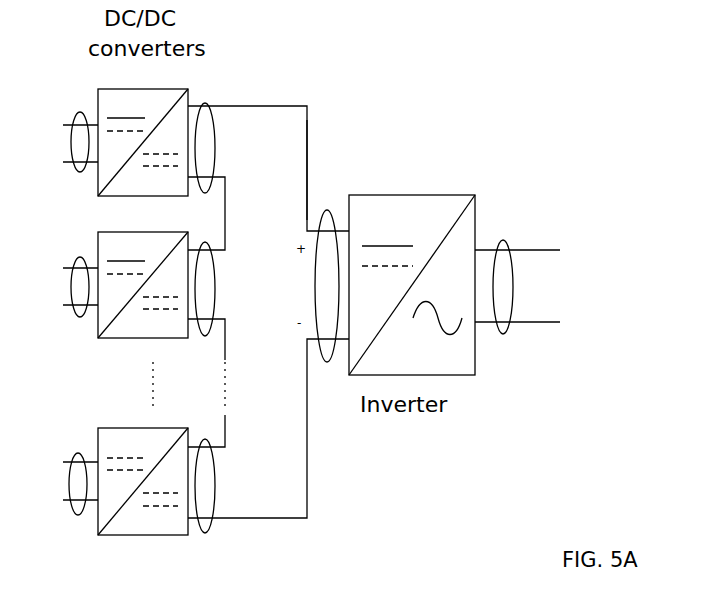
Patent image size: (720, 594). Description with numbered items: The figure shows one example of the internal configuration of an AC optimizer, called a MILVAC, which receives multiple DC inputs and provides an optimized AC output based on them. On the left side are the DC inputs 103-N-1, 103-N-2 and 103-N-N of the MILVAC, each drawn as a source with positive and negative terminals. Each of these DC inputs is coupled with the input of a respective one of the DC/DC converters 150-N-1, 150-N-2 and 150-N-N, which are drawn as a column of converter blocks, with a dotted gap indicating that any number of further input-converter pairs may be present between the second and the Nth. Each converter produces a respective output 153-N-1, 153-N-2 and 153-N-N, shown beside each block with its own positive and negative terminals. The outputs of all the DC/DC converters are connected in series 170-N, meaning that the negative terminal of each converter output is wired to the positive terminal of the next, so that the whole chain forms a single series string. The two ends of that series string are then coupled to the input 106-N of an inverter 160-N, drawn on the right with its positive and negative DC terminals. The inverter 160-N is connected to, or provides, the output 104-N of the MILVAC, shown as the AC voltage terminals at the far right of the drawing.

The DC input 103-N-1 is at (80, 112).
The DC input 103-N-2 is at (80, 257).
The DC input 103-N-N is at (78, 453).
The DC/DC converter 150-N-1 is at (165, 197).
The DC/DC converter 150-N-2 is at (147, 338).
The DC/DC converter 150-N-N is at (140, 535).
The output of DC/DC converter 153-N-1 is at (205, 103).
The output of DC/DC converter 153-N-2 is at (205, 242).
The output of DC/DC converter 153-N-N is at (208, 533).
The series connection 170-N is at (268, 92).
The input of inverter 106-N is at (328, 210).
The inverter 160-N is at (455, 375).
The output of MILVAC 104-N is at (503, 240).